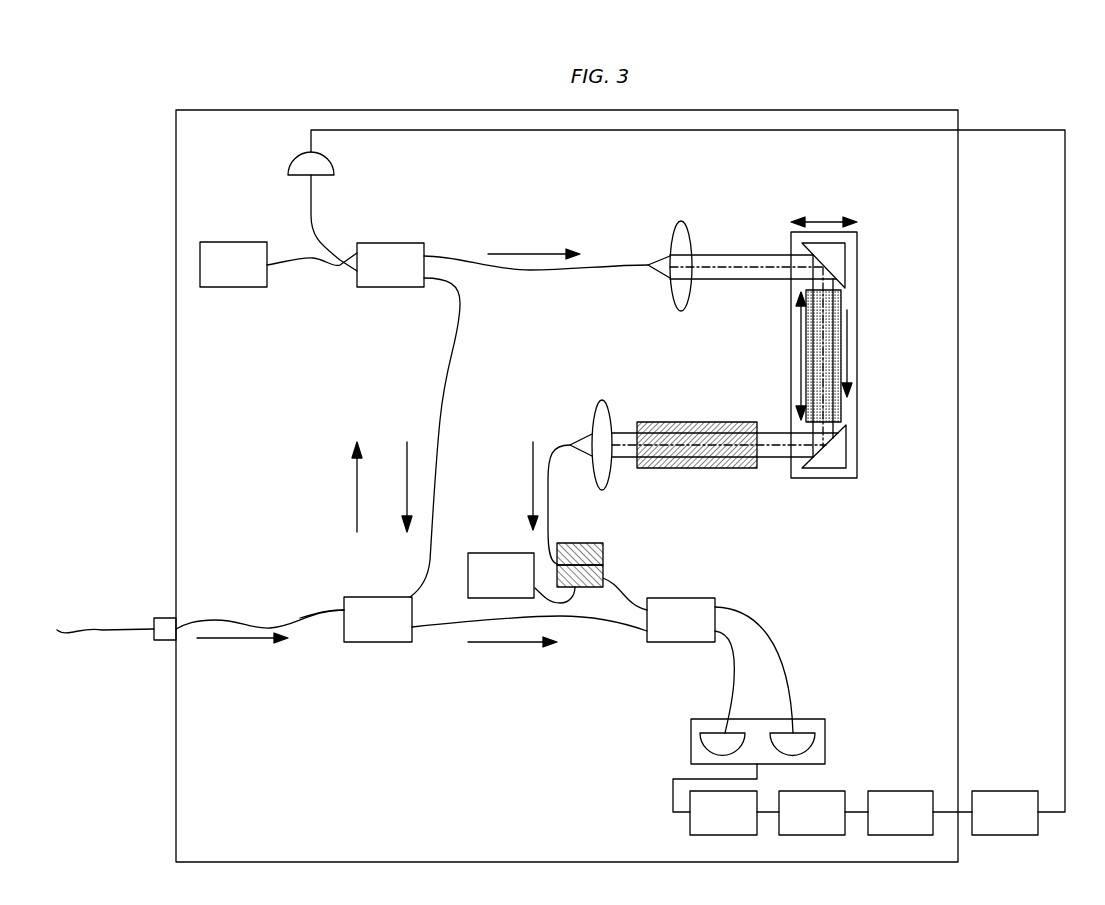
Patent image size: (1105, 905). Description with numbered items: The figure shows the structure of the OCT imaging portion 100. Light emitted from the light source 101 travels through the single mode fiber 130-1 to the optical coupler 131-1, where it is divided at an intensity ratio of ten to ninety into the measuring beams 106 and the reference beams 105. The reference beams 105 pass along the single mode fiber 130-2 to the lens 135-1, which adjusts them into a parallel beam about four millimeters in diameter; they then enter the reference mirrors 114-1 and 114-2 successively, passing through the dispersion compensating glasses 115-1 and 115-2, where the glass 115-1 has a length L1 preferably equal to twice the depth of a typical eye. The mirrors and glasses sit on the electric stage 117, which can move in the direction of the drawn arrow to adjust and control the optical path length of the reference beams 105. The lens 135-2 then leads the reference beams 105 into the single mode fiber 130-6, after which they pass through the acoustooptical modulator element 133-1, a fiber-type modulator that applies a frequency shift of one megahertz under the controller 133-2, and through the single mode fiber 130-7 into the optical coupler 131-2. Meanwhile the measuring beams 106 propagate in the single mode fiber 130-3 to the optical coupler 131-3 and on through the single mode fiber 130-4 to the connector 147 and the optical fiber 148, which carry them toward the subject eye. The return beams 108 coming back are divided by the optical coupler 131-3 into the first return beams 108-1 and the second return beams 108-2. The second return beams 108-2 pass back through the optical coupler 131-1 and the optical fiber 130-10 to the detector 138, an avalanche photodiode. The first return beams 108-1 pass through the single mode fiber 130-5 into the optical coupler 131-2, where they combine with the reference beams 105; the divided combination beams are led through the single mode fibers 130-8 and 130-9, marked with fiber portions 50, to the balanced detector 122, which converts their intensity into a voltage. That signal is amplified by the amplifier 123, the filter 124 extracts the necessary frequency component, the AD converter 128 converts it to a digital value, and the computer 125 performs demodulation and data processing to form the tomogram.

The OCT imaging portion 100 is at (226, 110).
The light source 101 is at (233, 264).
The reference beams 105 is at (849, 352).
The measuring beams 106 is at (389, 487).
The return beams 108 is at (260, 639).
The first return beams 108-1 is at (512, 655).
The second return beams 108-2 is at (327, 487).
The reference mirror 114-1 is at (846, 253).
The reference mirror 114-2 is at (847, 456).
The dispersion compensating glass 115-1 is at (841, 300).
The dispersion compensating glass 115-2 is at (683, 422).
The electric stage 117 is at (824, 336).
The length L1 is at (785, 356).
The balanced detector 122 is at (690, 746).
The amplifier 123 is at (723, 813).
The filter 124 is at (812, 813).
The computer 125 is at (1005, 813).
The AD converter 128 is at (900, 813).
The single mode fiber 130-1 is at (298, 270).
The single mode fiber 130-2 is at (557, 273).
The single mode fiber 130-3 is at (444, 372).
The single mode fiber 130-4 is at (321, 614).
The single mode fiber 130-5 is at (590, 621).
The single mode fiber 130-6 is at (548, 507).
The single mode fiber 130-7 is at (618, 583).
The single mode fiber 130-8 is at (733, 664).
The single mode fiber 130-9 is at (785, 677).
The optical fiber 130-10 is at (312, 211).
The optical coupler 131-1 is at (390, 265).
The optical coupler 131-2 is at (681, 620).
The optical coupler 131-3 is at (378, 619).
The acoustooptical modulator element 133-1 is at (590, 543).
The controller 133-2 is at (521, 578).
The lens 135-1 is at (672, 306).
The lens 135-2 is at (594, 412).
The detector 138 is at (334, 166).
The connector 147 is at (160, 642).
The optical fiber 148 is at (90, 630).
The optical fiber 50 is at (734, 612).